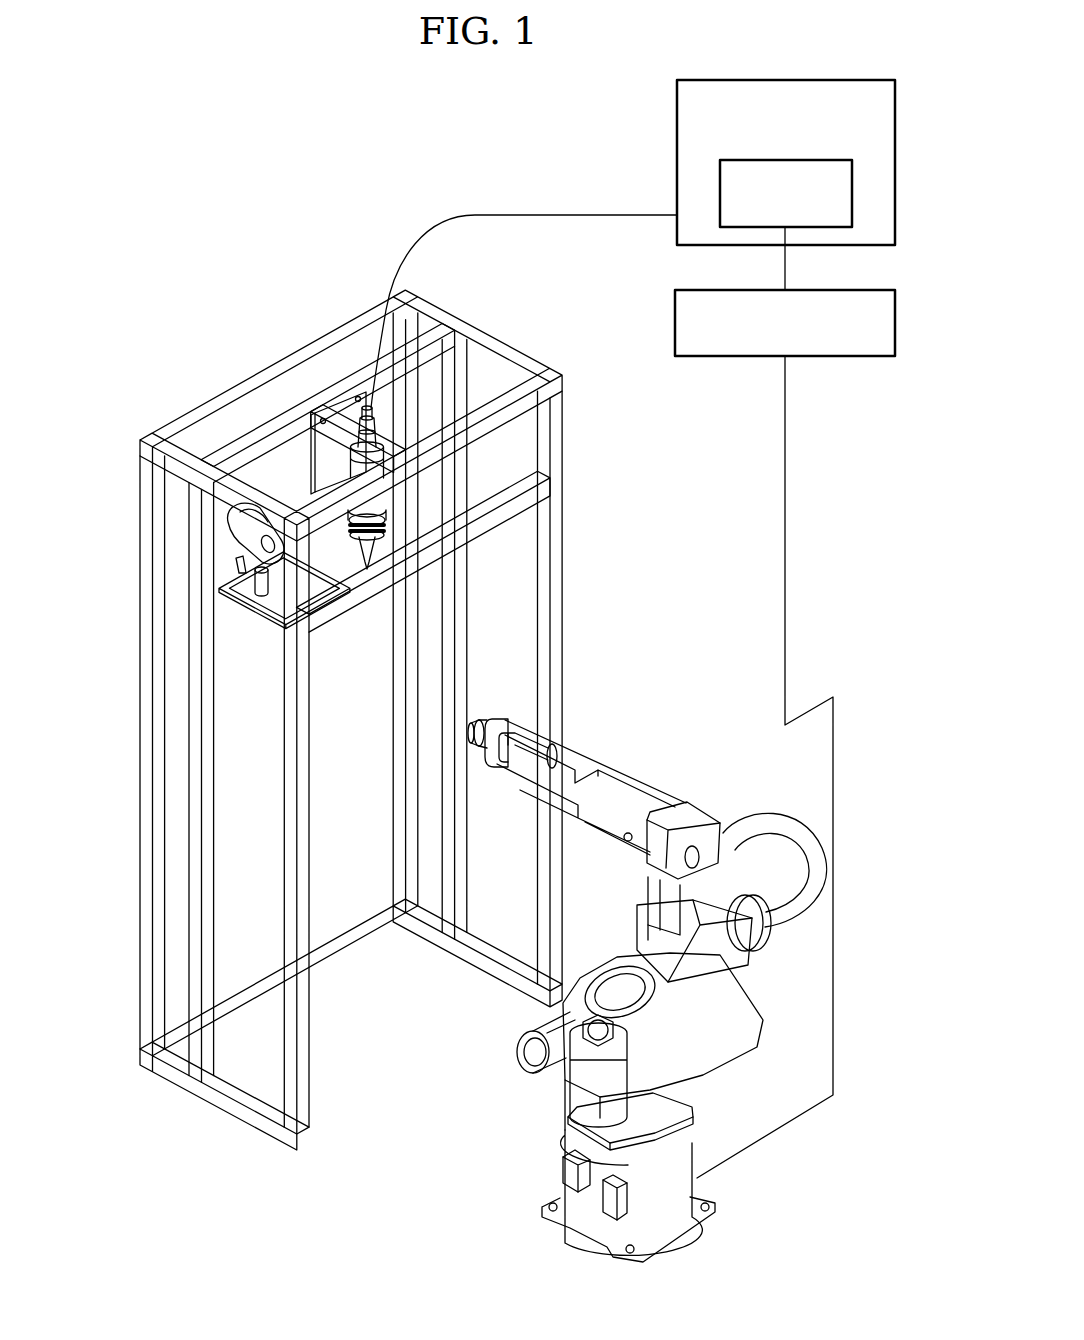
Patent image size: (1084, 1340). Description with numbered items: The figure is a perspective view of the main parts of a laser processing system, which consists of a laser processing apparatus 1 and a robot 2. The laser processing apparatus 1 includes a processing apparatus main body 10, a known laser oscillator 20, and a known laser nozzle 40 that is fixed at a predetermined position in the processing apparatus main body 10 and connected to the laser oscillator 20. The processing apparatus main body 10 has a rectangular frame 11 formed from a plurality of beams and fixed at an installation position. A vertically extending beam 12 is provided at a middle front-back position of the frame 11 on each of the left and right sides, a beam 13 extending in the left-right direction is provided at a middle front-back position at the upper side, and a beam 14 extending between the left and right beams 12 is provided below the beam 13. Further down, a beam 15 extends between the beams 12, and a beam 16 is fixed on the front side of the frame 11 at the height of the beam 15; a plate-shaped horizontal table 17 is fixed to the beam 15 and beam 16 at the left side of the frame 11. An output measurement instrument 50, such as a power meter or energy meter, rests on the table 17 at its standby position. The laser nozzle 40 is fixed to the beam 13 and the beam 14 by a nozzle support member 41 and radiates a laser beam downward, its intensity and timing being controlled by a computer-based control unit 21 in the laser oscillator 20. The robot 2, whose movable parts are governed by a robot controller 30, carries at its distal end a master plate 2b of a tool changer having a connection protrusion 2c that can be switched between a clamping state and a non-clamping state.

The laser processing apparatus 1 is at (176, 396).
The robot 2 is at (540, 1133).
The master plate 2b is at (500, 715).
The connection protrusion 2c is at (478, 718).
The processing apparatus main body 10 is at (140, 491).
The frame 11 is at (490, 332).
The beam 12 is at (185, 760).
The beam 13 is at (300, 405).
The beam 14 is at (268, 478).
The beam 15 is at (228, 577).
The beam 16 is at (505, 543).
The table 17 is at (250, 635).
The laser oscillator 20 is at (677, 157).
The control unit 21 is at (852, 192).
The robot controller 30 is at (840, 357).
The laser nozzle 40 is at (372, 580).
The nozzle support member 41 is at (340, 412).
The output measurement instrument 50 is at (228, 540).